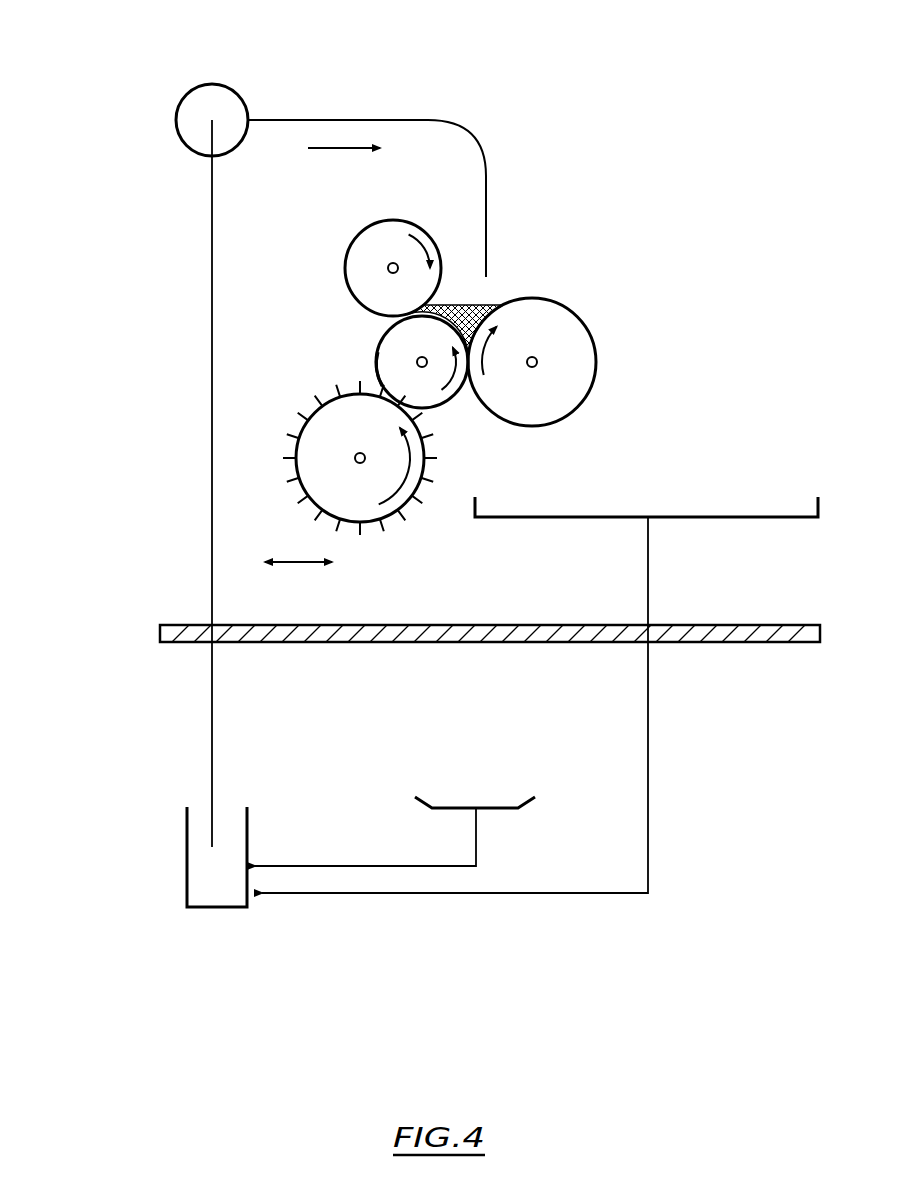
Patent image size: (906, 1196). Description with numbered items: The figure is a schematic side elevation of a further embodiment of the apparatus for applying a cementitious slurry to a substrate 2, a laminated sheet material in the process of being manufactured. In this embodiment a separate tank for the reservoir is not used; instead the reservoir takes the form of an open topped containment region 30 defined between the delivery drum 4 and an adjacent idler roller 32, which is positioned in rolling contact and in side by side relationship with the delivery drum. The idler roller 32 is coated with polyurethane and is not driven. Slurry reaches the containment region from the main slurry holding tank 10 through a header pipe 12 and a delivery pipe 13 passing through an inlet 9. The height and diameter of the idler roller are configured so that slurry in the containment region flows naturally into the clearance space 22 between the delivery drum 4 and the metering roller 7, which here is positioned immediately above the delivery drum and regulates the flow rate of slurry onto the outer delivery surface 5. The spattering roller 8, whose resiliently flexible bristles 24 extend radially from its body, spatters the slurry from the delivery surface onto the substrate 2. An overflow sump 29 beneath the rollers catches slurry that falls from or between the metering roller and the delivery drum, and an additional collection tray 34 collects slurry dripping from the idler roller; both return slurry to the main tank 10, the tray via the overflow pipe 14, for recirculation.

The substrate 2 is at (325, 647).
The delivery drum 4 is at (380, 372).
The outer delivery surface 5 is at (379, 350).
The metering roller 7 is at (360, 248).
The spattering roller 8 is at (427, 445).
The inlets 9 is at (491, 272).
The main slurry holding tank 10 is at (185, 852).
The header pipe 12 is at (193, 88).
The delivery pipes 13 is at (462, 128).
The overflow pipe 14 is at (650, 735).
The clearance space 22 is at (384, 325).
The bristles 24 is at (360, 528).
The overflow sump 29 is at (478, 797).
The containment region 30 is at (492, 300).
The idler roller 32 is at (597, 365).
The collection tray 34 is at (708, 512).